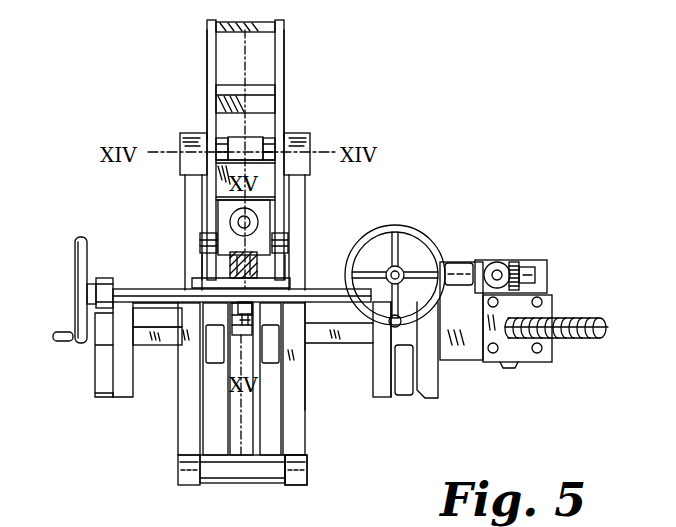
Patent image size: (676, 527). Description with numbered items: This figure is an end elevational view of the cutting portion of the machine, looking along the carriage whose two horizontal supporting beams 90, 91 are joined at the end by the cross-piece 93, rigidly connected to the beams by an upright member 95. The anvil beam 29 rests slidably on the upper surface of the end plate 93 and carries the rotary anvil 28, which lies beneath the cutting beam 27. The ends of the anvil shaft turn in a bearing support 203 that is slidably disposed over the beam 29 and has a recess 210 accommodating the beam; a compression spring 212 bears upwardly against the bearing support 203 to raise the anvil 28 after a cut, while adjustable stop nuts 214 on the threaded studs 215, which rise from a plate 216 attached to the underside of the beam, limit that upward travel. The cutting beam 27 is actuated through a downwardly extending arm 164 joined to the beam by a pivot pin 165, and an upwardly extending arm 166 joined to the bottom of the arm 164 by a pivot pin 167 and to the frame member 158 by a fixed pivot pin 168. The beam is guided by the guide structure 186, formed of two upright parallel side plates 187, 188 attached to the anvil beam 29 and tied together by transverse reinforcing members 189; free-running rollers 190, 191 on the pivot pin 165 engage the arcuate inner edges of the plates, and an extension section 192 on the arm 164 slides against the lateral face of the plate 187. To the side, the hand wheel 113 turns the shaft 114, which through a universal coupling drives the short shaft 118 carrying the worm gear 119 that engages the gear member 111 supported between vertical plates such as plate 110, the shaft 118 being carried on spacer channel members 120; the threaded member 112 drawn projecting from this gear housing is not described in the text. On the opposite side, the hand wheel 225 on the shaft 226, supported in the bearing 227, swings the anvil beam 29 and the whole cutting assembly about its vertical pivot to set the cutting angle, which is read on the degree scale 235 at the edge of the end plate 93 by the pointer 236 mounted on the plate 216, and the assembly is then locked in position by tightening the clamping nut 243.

The cutting beam 27 is at (247, 145).
The rotary anvil 28 is at (250, 222).
The anvil beam 29 is at (258, 276).
The horizontal supporting beam 90 is at (112, 395).
The horizontal supporting beam 91 is at (407, 395).
The cross-piece 93 is at (150, 296).
The upright member 95 is at (120, 390).
The vertical plate 110 is at (548, 360).
The gear member 111 is at (508, 368).
The feed screw 112 is at (580, 318).
The hand wheel 113 is at (418, 238).
The shaft 114 is at (460, 266).
The angularly extending shaft 118 is at (530, 268).
The worm gear 119 is at (512, 263).
The spacer channel member 120 is at (547, 277).
The frame member 158 is at (205, 425).
The lever or arm 164 is at (190, 453).
The pivot pin 165 is at (310, 152).
The upwardly extending arm 166 is at (275, 483).
The pivot pin 167 is at (308, 474).
The fixed pivot pin 168 is at (254, 325).
The guide structure 186 is at (295, 35).
The side plate 187 is at (212, 50).
The side plate 188 is at (280, 52).
The transverse reinforcing member 189 is at (262, 23).
The free-running roller 190 is at (222, 138).
The free-running roller 191 is at (268, 140).
The extension section 192 is at (183, 147).
The bearing support 203 is at (205, 270).
The recess 210 is at (232, 281).
The compression spring 212 is at (213, 246).
The adjustable stop nut 214 is at (283, 236).
The stud 215 is at (252, 268).
The plate 216 is at (287, 285).
The hand wheel 225 is at (75, 248).
The shaft 226 is at (130, 289).
The bearing 227 is at (99, 282).
The degree scale 235 is at (195, 330).
The pointer 236 is at (262, 290).
The clamping nut 243 is at (255, 340).